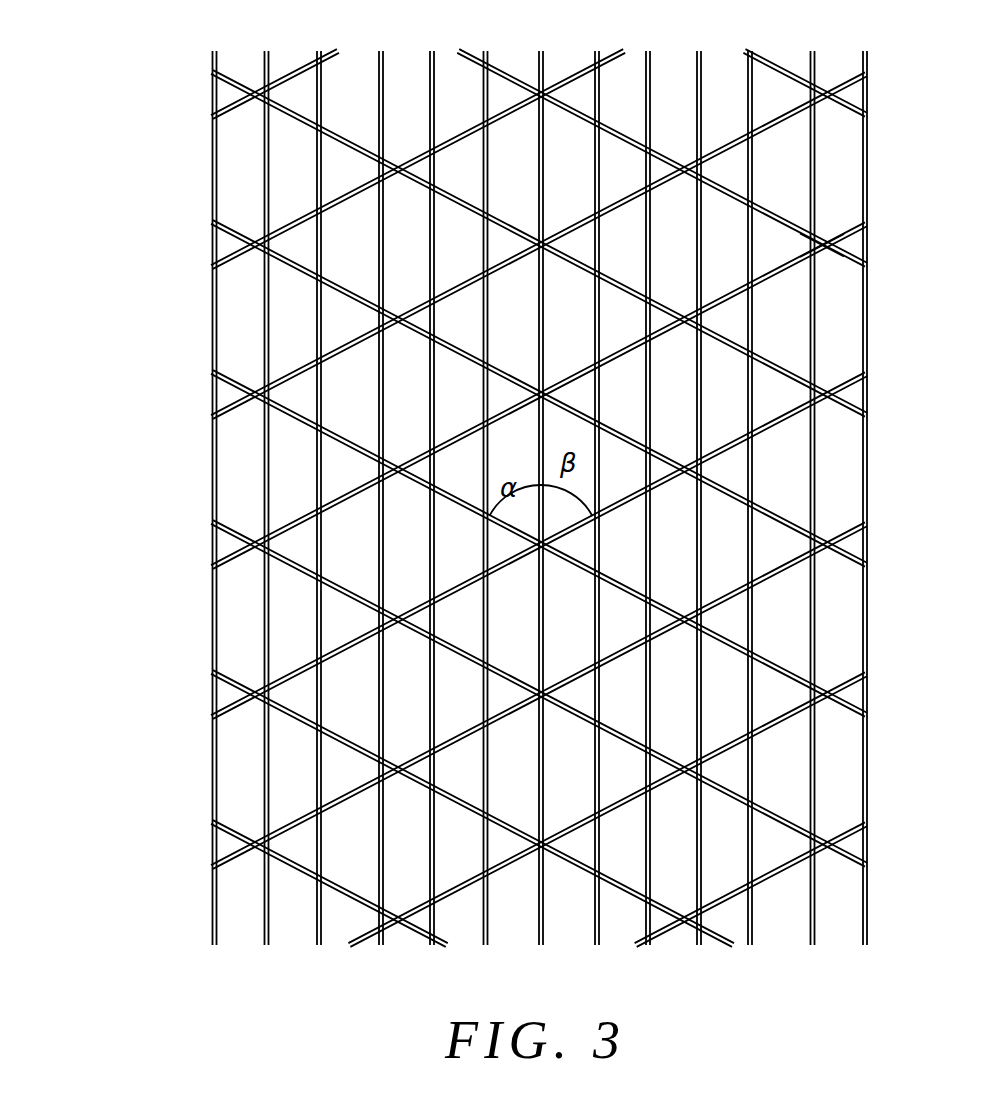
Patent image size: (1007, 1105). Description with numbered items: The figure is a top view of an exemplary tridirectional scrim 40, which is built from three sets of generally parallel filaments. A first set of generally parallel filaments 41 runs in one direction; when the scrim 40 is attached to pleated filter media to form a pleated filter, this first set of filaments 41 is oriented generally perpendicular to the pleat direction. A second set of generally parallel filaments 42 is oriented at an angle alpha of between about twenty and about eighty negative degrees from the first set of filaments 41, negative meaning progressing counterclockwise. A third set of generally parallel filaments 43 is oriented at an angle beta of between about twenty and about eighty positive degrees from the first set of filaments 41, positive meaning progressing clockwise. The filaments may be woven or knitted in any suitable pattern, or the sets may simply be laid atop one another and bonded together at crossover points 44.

The tridirectional scrim 40 is at (126, 88).
The first set of generally parallel filaments 41 is at (697, 72).
The second set of generally parallel filaments 42 is at (240, 387).
The third set of generally parallel filaments 43 is at (777, 709).
The crossover points 44 is at (815, 378).